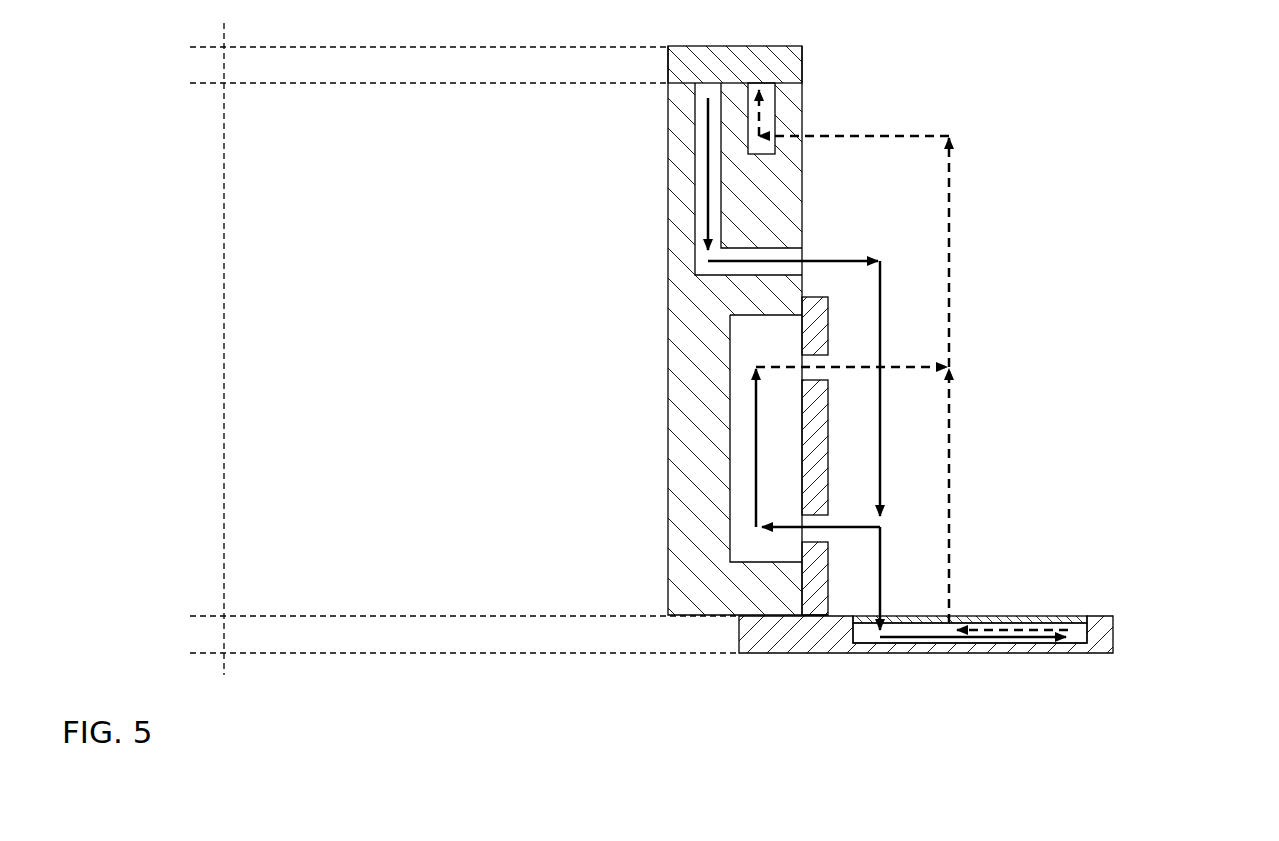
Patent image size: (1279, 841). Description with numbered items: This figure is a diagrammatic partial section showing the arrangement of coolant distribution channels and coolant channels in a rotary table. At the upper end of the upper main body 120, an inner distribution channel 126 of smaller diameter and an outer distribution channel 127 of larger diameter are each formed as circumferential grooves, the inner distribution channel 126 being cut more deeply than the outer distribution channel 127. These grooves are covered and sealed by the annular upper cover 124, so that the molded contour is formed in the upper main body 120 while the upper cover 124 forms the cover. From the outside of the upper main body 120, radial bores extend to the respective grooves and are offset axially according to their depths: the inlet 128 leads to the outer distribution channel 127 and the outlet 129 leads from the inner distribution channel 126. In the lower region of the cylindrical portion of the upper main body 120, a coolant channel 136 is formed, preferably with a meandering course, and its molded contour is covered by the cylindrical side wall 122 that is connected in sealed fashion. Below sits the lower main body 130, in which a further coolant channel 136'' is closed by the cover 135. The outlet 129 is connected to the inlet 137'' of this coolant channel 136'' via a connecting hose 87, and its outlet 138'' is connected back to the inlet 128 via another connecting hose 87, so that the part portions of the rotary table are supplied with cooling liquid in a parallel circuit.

The upper main body 120 is at (760, 289).
The upper cover 124 is at (785, 62).
The inner distribution channel 126 is at (708, 91).
The outer distribution channel 127 is at (760, 108).
The inlet 128 is at (802, 145).
The outlet 129 is at (802, 252).
The side wall 122 is at (815, 425).
The coolant channel 136 is at (983, 445).
The connecting hose 87 is at (949, 330).
The lower main body 130 is at (1087, 633).
The cover of radial coolant channel 135 is at (1075, 618).
The coolant channel 136'' is at (1050, 568).
The inlet 137'' is at (919, 671).
The outlet 138'' is at (970, 672).